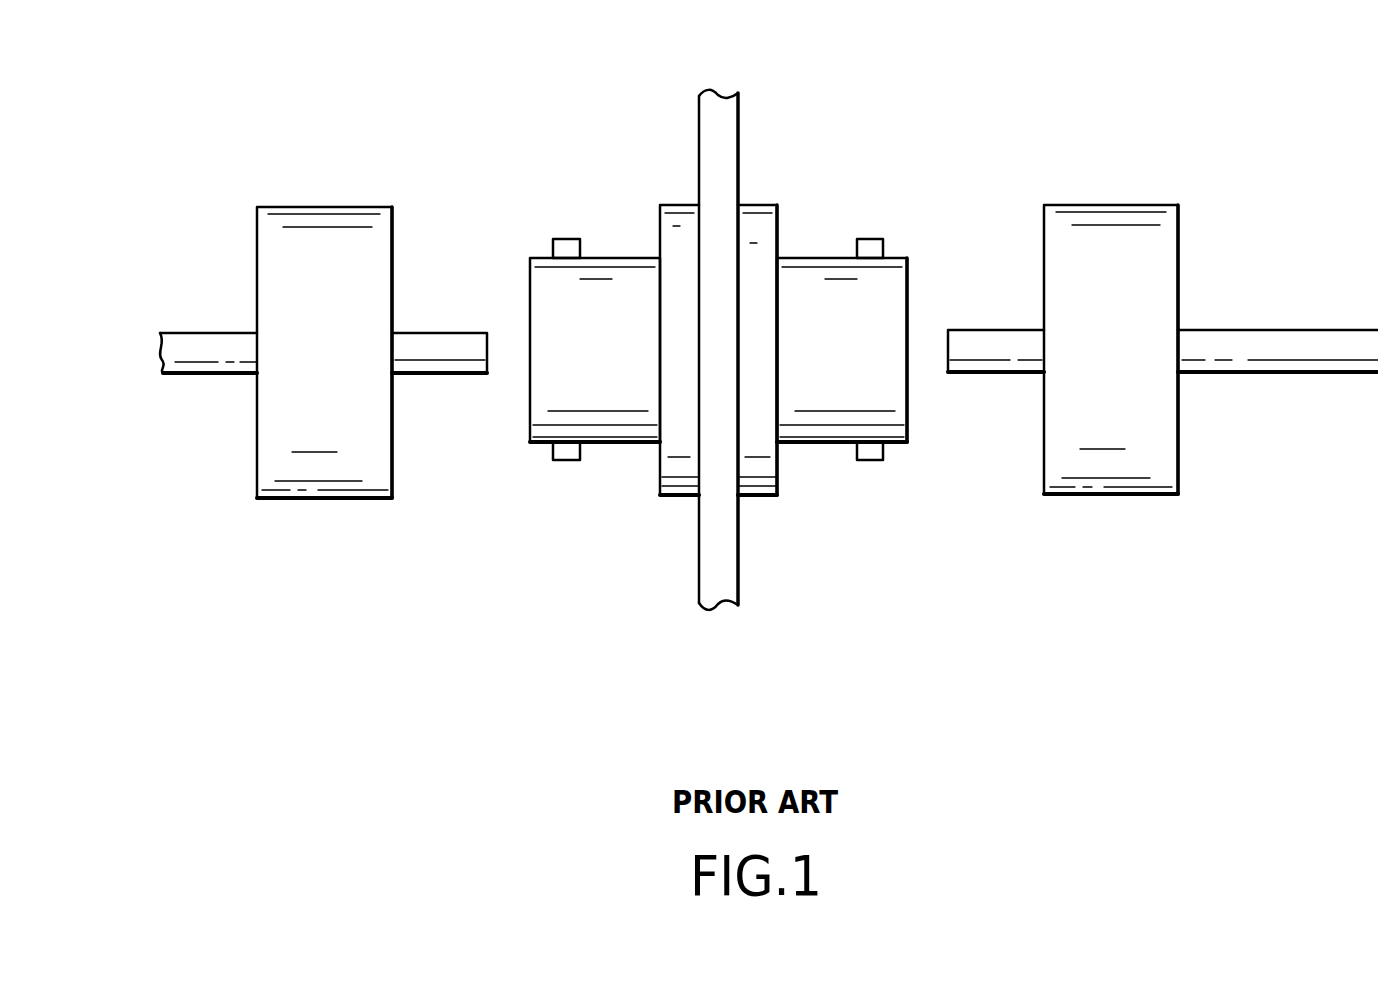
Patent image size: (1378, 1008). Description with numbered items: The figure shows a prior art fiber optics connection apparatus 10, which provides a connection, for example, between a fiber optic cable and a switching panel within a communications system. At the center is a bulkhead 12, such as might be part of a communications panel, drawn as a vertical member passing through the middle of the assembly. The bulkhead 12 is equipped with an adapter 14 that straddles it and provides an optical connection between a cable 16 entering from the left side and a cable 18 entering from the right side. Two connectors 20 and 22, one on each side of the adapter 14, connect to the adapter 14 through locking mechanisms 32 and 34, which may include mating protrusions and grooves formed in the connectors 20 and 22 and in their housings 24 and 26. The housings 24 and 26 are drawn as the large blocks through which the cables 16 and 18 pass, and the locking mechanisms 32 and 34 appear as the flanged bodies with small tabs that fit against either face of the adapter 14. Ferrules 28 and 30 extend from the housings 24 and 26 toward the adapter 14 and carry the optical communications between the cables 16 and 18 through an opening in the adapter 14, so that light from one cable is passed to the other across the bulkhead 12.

The fiber optics connection apparatus 10 is at (416, 685).
The bulkhead 12 is at (722, 606).
The adapter 14 is at (825, 256).
The cable 16 is at (210, 332).
The cable 18 is at (1270, 330).
The connector 20 is at (334, 510).
The connector 22 is at (1112, 510).
The housing 24 is at (324, 349).
The housing 26 is at (1111, 348).
The ferrule 28 is at (452, 332).
The ferrule 30 is at (1000, 330).
The locking mechanism 32 is at (570, 460).
The locking mechanism 34 is at (870, 460).